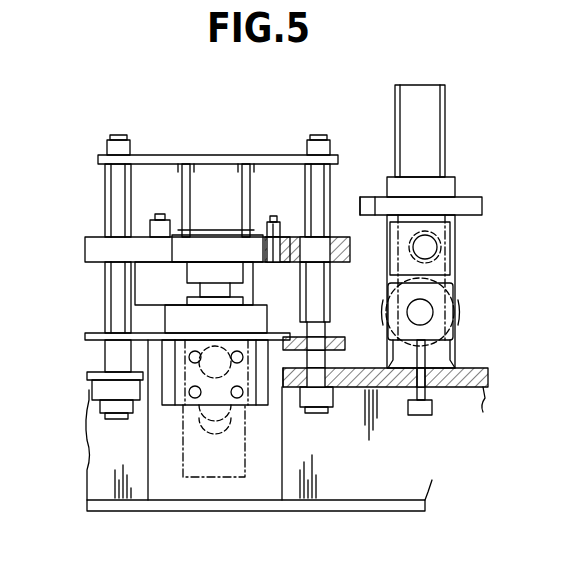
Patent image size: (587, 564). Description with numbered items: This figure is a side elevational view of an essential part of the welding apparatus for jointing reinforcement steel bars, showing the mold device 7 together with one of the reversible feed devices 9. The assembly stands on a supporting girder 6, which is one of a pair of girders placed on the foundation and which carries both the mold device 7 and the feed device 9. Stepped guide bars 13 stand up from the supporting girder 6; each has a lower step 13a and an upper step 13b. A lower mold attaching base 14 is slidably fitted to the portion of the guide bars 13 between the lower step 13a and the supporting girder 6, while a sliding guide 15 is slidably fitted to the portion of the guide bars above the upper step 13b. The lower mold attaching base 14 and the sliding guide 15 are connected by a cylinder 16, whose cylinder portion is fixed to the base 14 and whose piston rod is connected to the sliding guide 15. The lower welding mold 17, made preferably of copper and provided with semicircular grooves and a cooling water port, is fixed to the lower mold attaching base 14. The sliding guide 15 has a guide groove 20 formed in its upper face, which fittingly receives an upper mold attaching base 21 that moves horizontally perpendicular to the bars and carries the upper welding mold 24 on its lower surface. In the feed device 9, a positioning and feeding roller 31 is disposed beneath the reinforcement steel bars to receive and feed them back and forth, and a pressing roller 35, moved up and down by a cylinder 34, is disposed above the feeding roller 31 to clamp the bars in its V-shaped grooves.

The supporting girder 6 is at (348, 480).
The mold device 7 is at (160, 283).
The reversible feed device 9 is at (462, 283).
The stepped guide bar 13 is at (112, 210).
The lower step 13a is at (117, 325).
The upper step 13b is at (328, 238).
The lower mold attaching base 14 is at (127, 335).
The sliding guide 15 is at (102, 248).
The cylinder 16 is at (220, 465).
The lower welding mold 17 is at (180, 295).
The guide groove 20 is at (205, 255).
The upper mold attaching base 21 is at (218, 240).
The upper welding mold 24 is at (185, 268).
The positioning and feeding roller 31 is at (460, 312).
The cylinder 34 is at (432, 147).
The pressing roller 35 is at (427, 245).